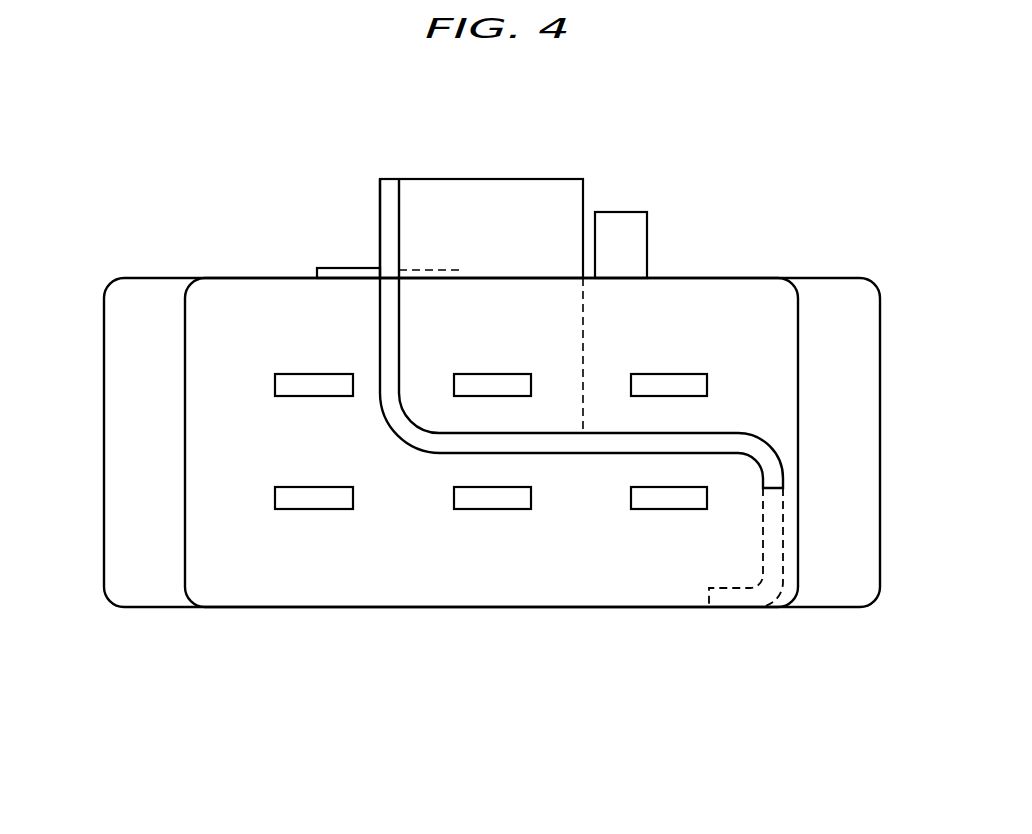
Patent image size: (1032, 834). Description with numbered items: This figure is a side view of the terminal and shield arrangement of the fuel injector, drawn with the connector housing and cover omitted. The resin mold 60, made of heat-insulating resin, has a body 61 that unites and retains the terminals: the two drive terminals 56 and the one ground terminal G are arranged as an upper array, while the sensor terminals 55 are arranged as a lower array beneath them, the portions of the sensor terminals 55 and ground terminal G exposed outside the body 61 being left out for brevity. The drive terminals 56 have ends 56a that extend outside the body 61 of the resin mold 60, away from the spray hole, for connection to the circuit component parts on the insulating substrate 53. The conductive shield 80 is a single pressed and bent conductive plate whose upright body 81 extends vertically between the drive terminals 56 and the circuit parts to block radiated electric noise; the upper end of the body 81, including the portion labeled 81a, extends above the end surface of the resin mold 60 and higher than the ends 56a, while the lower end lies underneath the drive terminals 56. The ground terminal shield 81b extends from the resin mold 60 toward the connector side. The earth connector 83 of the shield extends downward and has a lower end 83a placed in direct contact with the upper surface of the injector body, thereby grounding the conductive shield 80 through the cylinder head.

The resin mold 60 is at (112, 605).
The body 61 is at (118, 489).
The insulating substrate 53 is at (320, 267).
The upright body 81 is at (485, 210).
The board portion 81a is at (563, 215).
The ground terminal shield 81b is at (379, 218).
The conductive shield 80 is at (414, 453).
The ends of drive terminals 56a is at (648, 240).
The drive terminals 56 is at (495, 374).
The ground terminal G is at (300, 374).
The sensor terminals 55 is at (305, 509).
The earth connector 83 is at (783, 523).
The lower end 83a is at (733, 607).